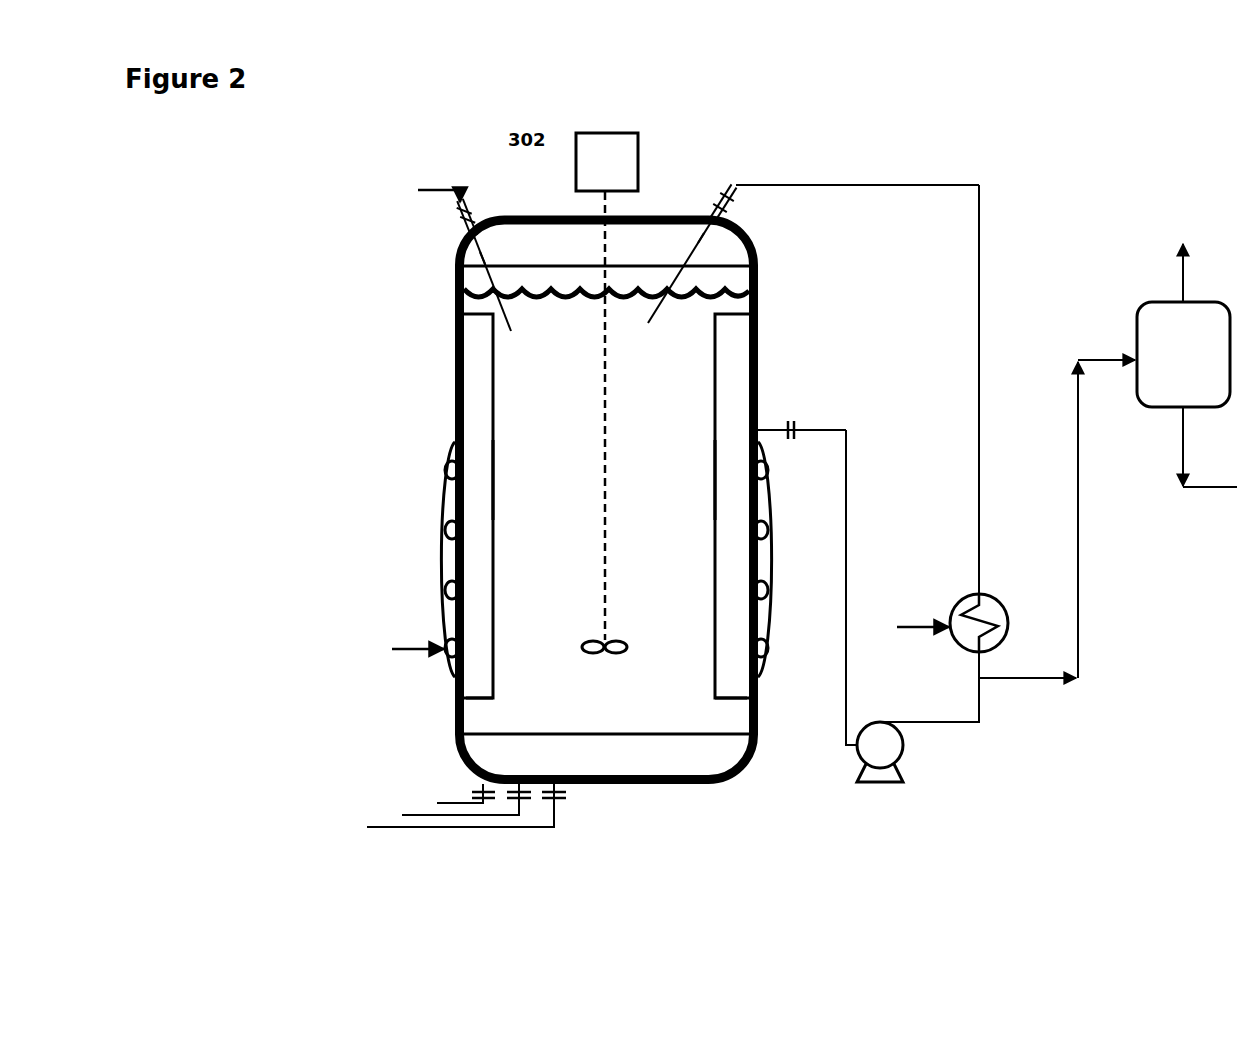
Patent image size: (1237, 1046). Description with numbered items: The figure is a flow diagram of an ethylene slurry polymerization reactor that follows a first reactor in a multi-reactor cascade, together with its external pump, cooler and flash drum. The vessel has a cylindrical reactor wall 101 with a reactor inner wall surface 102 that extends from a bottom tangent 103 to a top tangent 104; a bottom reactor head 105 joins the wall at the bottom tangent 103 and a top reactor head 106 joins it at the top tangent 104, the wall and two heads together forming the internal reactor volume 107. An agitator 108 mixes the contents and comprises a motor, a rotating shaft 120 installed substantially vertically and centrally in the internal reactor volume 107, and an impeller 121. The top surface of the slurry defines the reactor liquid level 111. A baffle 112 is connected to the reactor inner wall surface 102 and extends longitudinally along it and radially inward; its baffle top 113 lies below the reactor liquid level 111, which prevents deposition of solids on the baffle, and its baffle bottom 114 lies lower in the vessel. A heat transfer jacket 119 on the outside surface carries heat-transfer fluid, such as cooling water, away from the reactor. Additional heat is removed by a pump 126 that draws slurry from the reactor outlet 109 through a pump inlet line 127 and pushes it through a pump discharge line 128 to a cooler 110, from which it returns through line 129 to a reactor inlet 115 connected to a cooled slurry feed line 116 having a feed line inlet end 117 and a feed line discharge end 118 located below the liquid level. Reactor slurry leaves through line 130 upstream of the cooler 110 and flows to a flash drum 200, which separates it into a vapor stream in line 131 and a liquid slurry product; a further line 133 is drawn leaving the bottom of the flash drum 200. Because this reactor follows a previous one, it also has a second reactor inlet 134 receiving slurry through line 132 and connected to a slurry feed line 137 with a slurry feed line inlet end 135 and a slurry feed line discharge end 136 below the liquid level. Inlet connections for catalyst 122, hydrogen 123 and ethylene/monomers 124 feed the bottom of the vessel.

The cylindrical reactor wall 101 is at (452, 362).
The reactor inner wall surface 102 is at (476, 720).
The bottom tangent 103 is at (609, 735).
The top tangent 104 is at (607, 266).
The bottom reactor head 105 is at (609, 746).
The top reactor head 106 is at (607, 266).
The internal reactor volume 107 is at (606, 449).
The agitator 108 is at (617, 154).
The reactor outlet 109 is at (802, 421).
The cooler 110 is at (943, 617).
The reactor liquid level 111 is at (519, 284).
The baffle 112 is at (606, 480).
The baffle top 113 is at (606, 508).
The baffle bottom 114 is at (606, 699).
The reactor inlet 115 is at (722, 188).
The cooled slurry feed line 116 is at (701, 240).
The feed line inlet end 117 is at (716, 213).
The feed line discharge end 118 is at (669, 280).
The heat transfer jacket 119 is at (440, 520).
The rotating shaft 120 is at (591, 416).
The impeller 121 is at (604, 657).
The catalyst inlet connection 122 is at (435, 793).
The hydrogen inlet connection 123 is at (434, 802).
The ethylene/monomers inlet connection 124 is at (422, 816).
The pump 126 is at (904, 752).
The pump inlet line 127 is at (862, 587).
The pump discharge line 128 is at (929, 687).
The line 129 is at (965, 389).
The line 130 is at (1057, 532).
The line 131 is at (1202, 273).
The line 132 is at (410, 179).
The bottom stream 133 is at (1210, 457).
The second reactor inlet 134 is at (472, 208).
The slurry feed line inlet end 135 is at (460, 232).
The slurry feed line discharge end 136 is at (505, 288).
The slurry feed line 137 is at (486, 258).
The flash drum 200 is at (1183, 354).